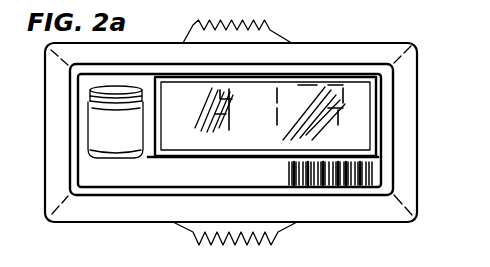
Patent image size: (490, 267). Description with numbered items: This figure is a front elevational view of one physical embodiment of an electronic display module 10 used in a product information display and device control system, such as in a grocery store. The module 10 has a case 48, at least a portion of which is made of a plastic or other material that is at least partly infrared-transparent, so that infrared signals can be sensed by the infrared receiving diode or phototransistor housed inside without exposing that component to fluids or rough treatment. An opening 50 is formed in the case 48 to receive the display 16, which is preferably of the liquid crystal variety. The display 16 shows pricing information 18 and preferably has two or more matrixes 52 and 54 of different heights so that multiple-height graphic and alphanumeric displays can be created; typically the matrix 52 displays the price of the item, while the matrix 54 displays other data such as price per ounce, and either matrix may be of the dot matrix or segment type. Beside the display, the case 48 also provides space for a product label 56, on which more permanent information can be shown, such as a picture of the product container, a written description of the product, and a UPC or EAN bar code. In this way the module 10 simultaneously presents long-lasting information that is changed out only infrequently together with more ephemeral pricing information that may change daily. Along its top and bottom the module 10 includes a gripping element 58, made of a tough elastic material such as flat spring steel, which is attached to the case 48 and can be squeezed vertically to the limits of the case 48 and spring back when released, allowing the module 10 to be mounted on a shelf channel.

The module 10 is at (429, 51).
The display 16 is at (358, 113).
The pricing information 18 is at (331, 91).
The case 48 is at (387, 48).
The opening 50 is at (370, 136).
The matrix 52 is at (208, 94).
The matrix 54 is at (250, 146).
The product label 56 is at (100, 122).
The gripping element 58 is at (274, 26).